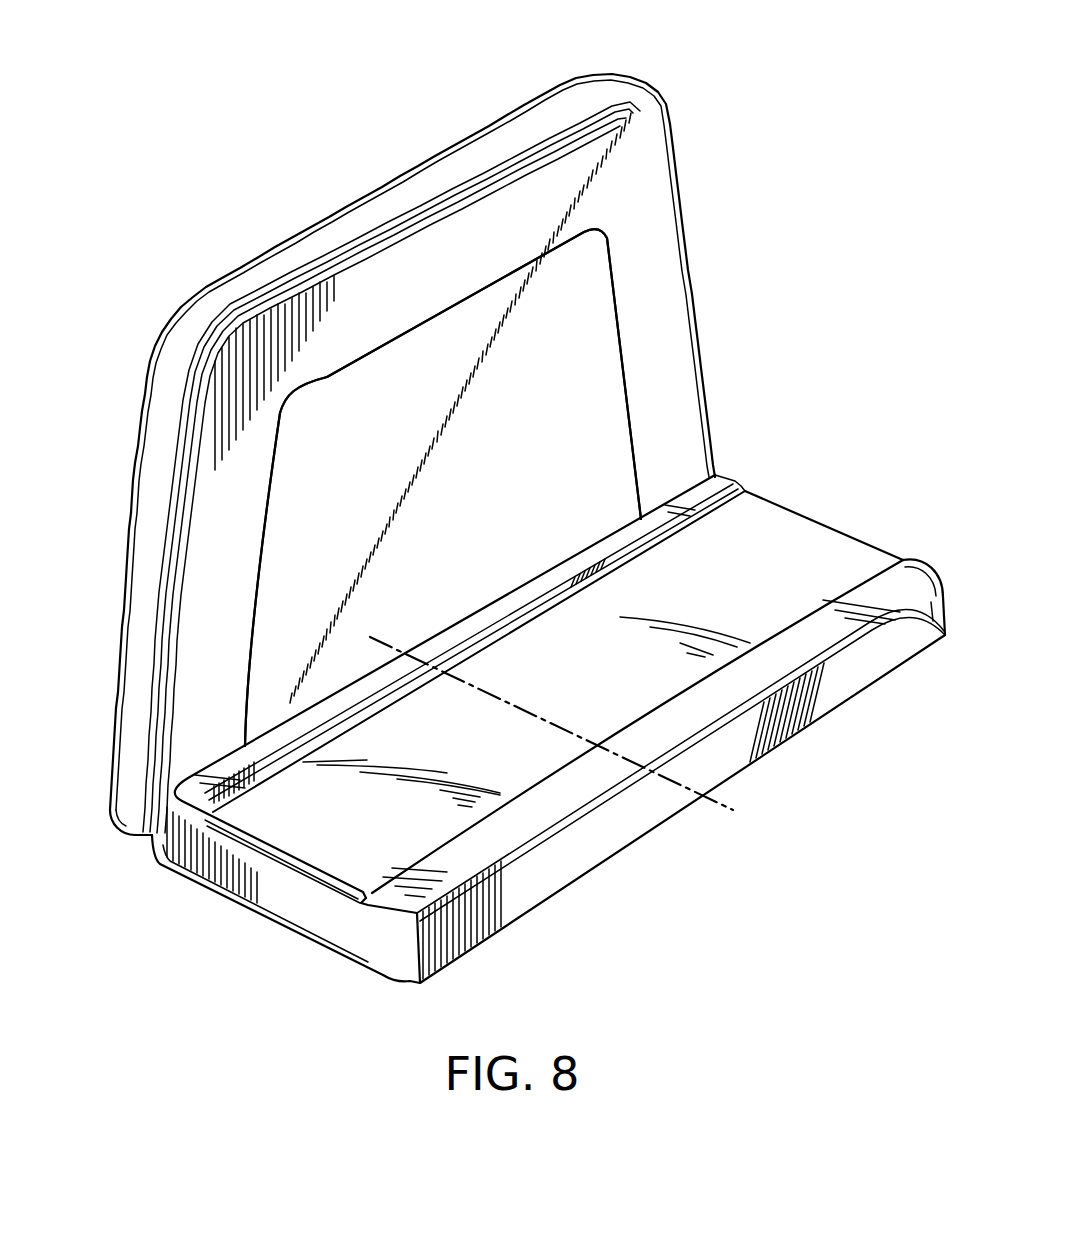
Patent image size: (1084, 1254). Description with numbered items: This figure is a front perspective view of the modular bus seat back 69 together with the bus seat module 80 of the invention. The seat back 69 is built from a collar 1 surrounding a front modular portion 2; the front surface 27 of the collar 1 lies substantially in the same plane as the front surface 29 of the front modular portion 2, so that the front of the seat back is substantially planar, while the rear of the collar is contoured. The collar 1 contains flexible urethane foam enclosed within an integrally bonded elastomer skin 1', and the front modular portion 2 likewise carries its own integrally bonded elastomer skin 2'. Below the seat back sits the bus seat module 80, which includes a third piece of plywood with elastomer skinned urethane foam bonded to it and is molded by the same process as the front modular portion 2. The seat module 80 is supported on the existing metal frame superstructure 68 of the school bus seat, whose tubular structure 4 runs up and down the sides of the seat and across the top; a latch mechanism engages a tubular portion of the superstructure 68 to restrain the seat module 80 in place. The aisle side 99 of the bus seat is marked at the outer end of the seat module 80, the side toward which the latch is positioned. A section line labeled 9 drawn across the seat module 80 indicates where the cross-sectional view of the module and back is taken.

The collar 1 is at (412, 454).
The integrally bonded elastomer skin 1' is at (203, 390).
The front modular portion 2 is at (498, 487).
The integrally bonded elastomer skin 2' is at (499, 487).
The tubular structure 4 is at (333, 957).
The section line 9- 9 is at (771, 786).
The front surface 27 is at (205, 662).
The front surface 29 is at (598, 385).
The superstructure 68 is at (219, 912).
The modular bus seat back 69 is at (509, 85).
The bus seat module 80 is at (614, 856).
The aisle side 99 is at (817, 504).